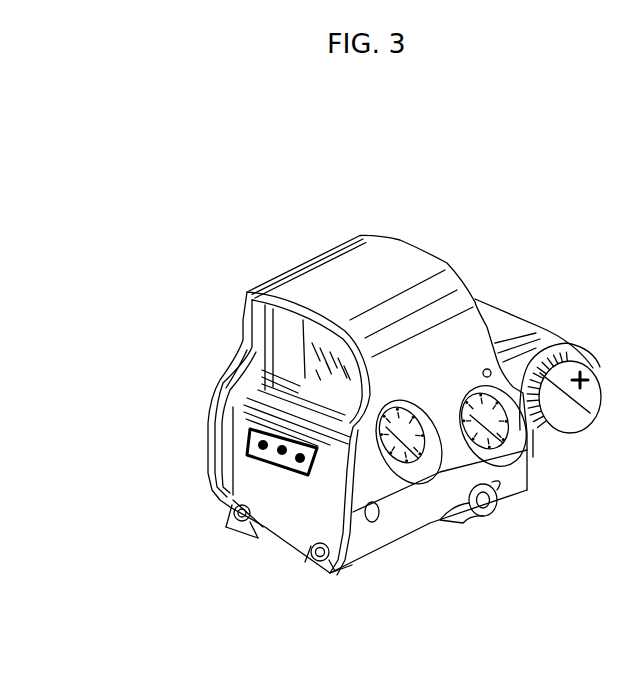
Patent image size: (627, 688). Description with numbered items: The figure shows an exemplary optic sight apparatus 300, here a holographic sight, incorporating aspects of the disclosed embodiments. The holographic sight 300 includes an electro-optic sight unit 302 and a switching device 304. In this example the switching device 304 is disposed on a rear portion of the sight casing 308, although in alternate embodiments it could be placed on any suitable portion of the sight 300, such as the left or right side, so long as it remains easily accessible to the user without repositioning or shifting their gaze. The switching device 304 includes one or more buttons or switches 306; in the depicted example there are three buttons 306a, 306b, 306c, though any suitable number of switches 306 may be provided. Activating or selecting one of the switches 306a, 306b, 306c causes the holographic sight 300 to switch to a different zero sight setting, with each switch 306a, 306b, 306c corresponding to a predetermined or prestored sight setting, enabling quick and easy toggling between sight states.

The optic sight apparatus 300 is at (197, 193).
The electro-optic sight unit 302 is at (331, 358).
The switching device 304 is at (306, 476).
The switches 306 is at (267, 467).
The first switch 306a is at (255, 441).
The second switch 306b is at (268, 459).
The third switch 306c is at (312, 478).
The sight casing 308 is at (422, 252).